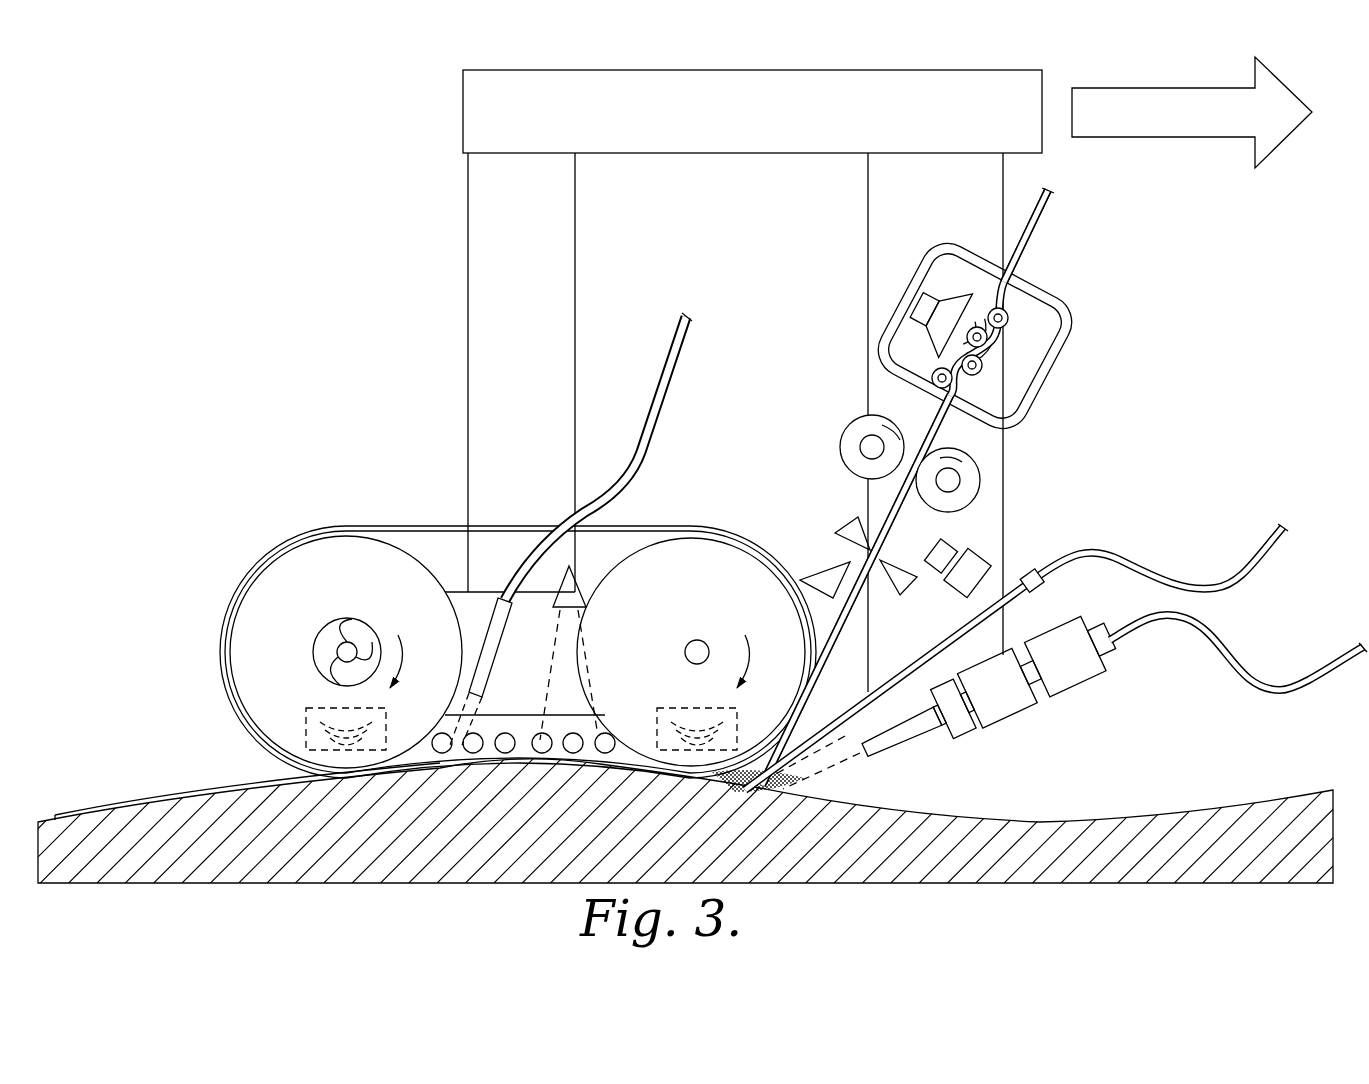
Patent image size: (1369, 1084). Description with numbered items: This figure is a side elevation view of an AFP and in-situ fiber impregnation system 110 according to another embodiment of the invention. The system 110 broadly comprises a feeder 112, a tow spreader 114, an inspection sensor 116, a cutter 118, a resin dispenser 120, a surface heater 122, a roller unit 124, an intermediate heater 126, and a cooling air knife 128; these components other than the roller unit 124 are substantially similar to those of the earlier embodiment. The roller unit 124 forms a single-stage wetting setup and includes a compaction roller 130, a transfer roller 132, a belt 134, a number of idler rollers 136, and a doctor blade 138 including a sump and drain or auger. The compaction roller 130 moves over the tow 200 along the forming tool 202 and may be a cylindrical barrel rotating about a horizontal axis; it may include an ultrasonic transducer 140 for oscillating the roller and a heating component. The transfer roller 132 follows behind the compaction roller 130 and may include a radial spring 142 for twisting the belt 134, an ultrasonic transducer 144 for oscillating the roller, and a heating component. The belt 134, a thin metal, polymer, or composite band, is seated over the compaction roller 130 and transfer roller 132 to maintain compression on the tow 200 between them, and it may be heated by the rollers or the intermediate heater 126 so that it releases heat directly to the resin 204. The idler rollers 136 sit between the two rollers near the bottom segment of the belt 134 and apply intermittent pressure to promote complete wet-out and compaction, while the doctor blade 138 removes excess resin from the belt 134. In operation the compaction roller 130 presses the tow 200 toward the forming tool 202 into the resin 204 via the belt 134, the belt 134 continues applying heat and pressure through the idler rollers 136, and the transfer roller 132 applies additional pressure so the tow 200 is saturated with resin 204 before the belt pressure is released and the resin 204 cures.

The AFP and in-situ fiber impregnation system 110 is at (425, 72).
The feeder 112 is at (1000, 470).
The tow spreader 114 is at (1083, 315).
The inspection sensor 116 is at (972, 560).
The cutter 118 is at (835, 513).
The resin dispenser 120 is at (1045, 575).
The surface heater 122 is at (1052, 712).
The roller unit 124 is at (516, 620).
The intermediate heater 126 is at (574, 580).
The cooling air knife 128 is at (485, 622).
The compaction roller 130 is at (720, 560).
The transfer roller 132 is at (305, 553).
The belt 134 is at (381, 527).
The idler rollers 136 is at (541, 755).
The doctor blade 138 is at (818, 573).
The ultrasonic transducer 140 is at (662, 712).
The radial spring 142 is at (330, 635).
The ultrasonic transducer 144 is at (318, 710).
The tow 200 is at (1047, 205).
The forming tool 202 is at (1185, 828).
The resin 204 is at (755, 790).